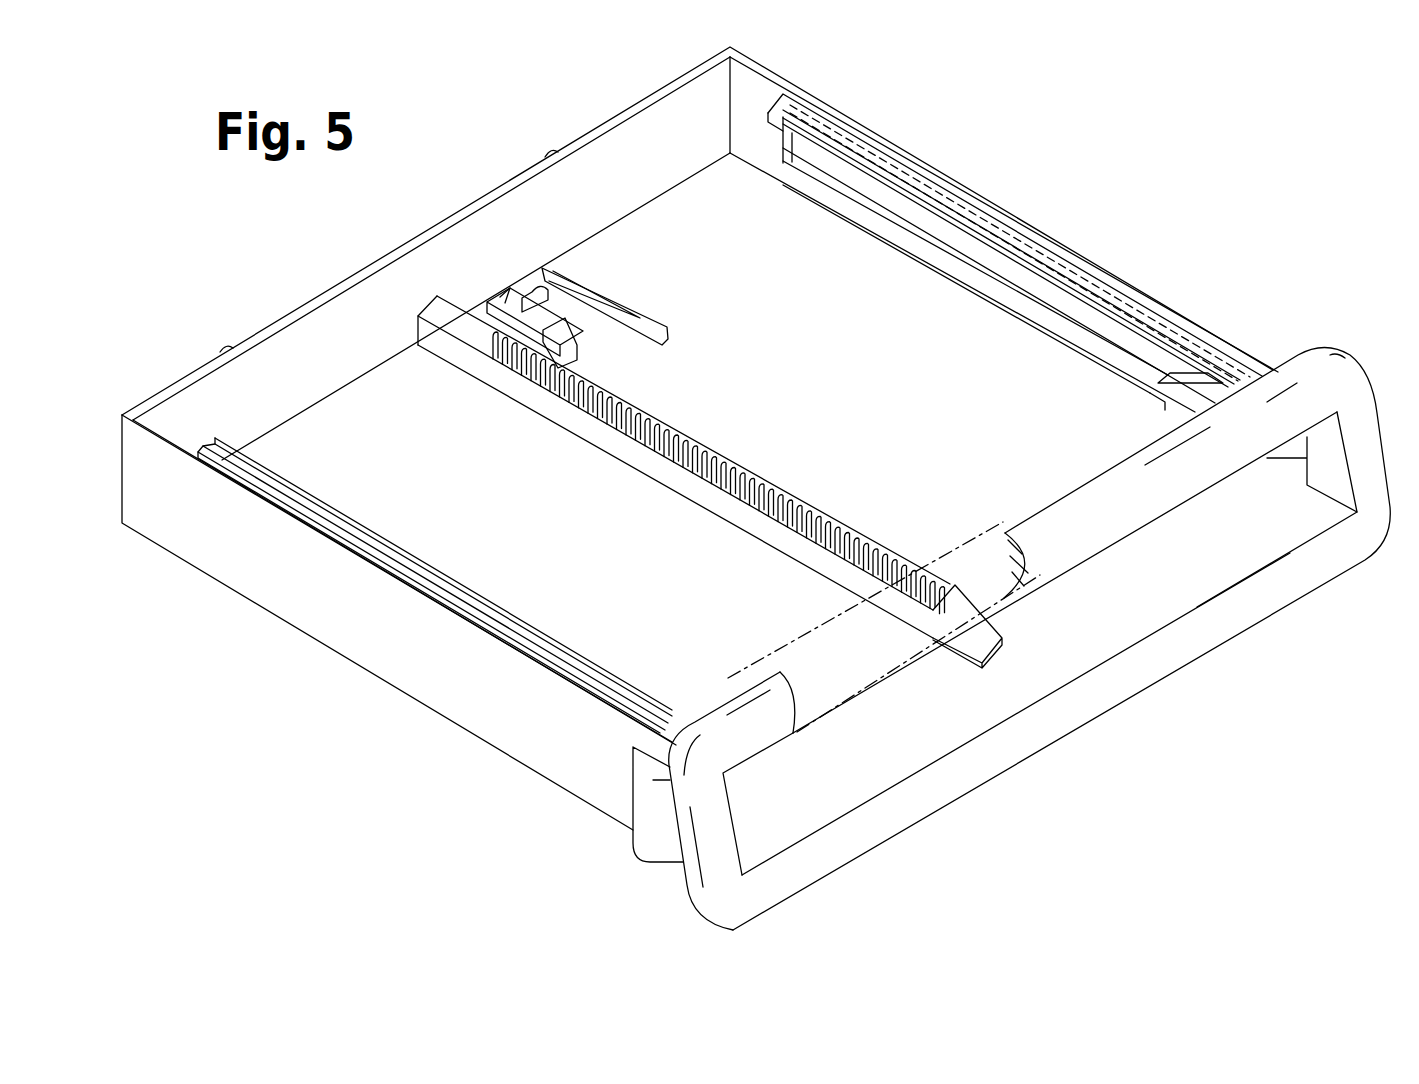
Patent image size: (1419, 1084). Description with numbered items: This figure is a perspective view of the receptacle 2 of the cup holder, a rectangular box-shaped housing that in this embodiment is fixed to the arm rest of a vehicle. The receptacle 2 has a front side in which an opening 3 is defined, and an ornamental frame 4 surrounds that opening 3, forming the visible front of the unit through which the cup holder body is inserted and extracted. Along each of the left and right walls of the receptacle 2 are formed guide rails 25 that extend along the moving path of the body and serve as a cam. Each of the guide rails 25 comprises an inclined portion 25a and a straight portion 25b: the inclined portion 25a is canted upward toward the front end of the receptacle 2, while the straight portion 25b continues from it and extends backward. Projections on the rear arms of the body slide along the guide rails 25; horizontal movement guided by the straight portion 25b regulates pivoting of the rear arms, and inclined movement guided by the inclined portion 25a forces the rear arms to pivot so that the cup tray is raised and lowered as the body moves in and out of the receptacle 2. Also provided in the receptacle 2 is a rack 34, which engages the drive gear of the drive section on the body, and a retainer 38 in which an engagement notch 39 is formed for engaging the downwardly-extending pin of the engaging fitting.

The receptacle 2 is at (623, 110).
The opening 3 is at (1200, 592).
The ornamental frame 4 is at (1307, 597).
The guide rails 25 is at (962, 272).
The inclined portion 25a is at (1180, 389).
The straight portion 25b is at (898, 247).
The rack 34 is at (738, 470).
The retainer 38 is at (613, 290).
The engagement notch 39 is at (530, 290).